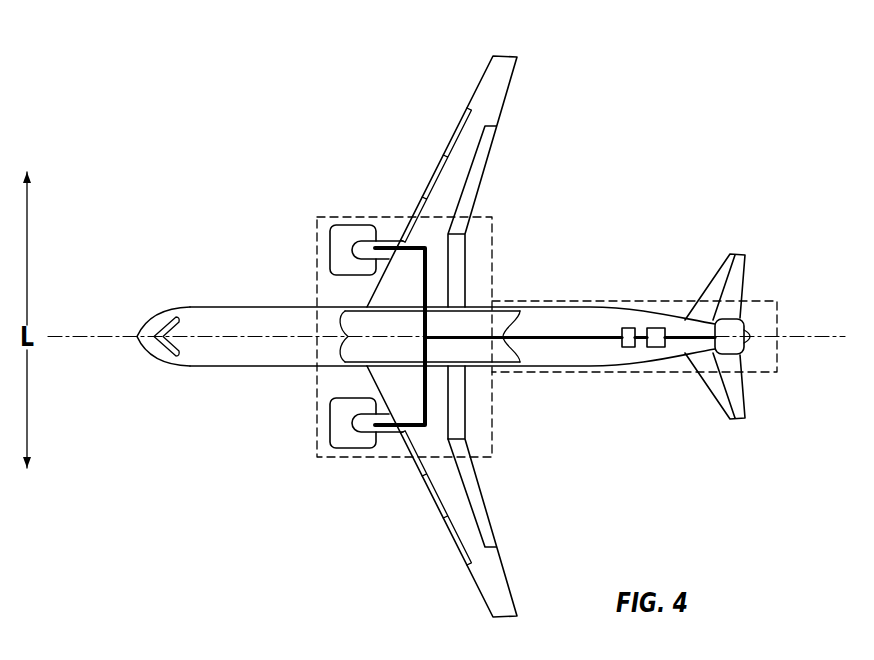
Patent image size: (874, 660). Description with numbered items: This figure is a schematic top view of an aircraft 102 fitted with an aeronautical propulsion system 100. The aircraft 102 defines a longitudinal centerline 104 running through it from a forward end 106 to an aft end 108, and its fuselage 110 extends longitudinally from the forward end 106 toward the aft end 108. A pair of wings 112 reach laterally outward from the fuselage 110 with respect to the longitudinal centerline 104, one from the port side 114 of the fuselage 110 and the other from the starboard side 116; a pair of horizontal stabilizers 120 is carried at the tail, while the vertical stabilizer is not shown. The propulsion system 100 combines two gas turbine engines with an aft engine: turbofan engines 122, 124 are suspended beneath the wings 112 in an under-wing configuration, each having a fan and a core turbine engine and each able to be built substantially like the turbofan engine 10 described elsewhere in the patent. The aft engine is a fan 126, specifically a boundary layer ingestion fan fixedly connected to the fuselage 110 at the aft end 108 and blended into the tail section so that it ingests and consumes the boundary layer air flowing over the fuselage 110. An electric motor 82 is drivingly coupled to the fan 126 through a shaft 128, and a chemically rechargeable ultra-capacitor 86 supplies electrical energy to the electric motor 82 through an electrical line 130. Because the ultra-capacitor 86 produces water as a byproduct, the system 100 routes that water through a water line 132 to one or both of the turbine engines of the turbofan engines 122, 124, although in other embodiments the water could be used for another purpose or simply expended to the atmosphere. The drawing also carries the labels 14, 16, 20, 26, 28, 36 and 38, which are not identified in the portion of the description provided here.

The turbofan engine 10 is at (619, 145).
The aft end 14 is at (810, 338).
The forward end 16 is at (142, 315).
The wing 20 is at (470, 530).
The leading edge slat 26 is at (435, 498).
The aileron 28 is at (483, 502).
The elevator 36 is at (738, 272).
The electric communication bus 38 is at (576, 350).
The electric motor 82 is at (654, 349).
The chemically rechargeable ultra-capacitor 86 is at (627, 349).
The aeronautical propulsion system 100 is at (593, 300).
The aircraft 102 is at (173, 135).
The longitudinal centerline 104 is at (80, 338).
The forward end 106 is at (134, 347).
The aft end 108 is at (706, 413).
The fuselage 110 is at (176, 364).
The wings 112 is at (498, 87).
The port side 114 is at (258, 370).
The starboard side 116 is at (257, 303).
The horizontal stabilizers 120 is at (720, 272).
The turbofan engine 122 is at (345, 447).
The turbofan engine 124 is at (345, 226).
The fan 126 is at (742, 354).
The shaft 128 is at (684, 330).
The electrical line 130 is at (639, 327).
The water line 132 is at (550, 336).